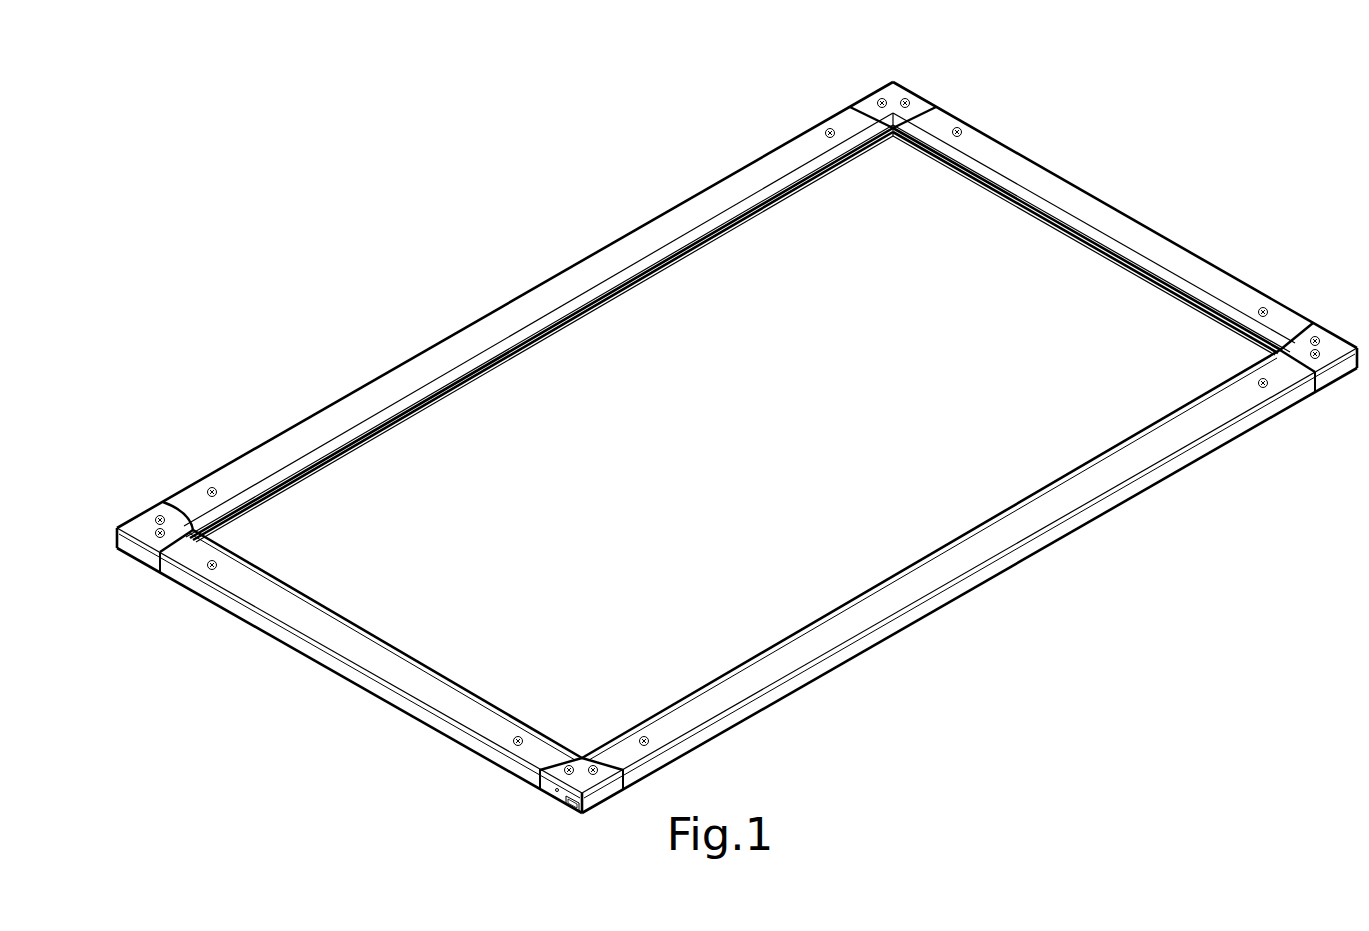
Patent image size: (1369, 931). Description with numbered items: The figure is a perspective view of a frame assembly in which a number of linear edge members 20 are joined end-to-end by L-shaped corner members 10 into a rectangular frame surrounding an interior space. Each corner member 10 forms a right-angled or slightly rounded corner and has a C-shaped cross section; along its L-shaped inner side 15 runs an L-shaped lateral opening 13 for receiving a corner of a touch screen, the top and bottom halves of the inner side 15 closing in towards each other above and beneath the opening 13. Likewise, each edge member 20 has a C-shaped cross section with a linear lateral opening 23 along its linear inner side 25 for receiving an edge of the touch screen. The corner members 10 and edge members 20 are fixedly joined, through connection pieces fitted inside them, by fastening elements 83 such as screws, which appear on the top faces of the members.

The corner member 10 is at (737, 429).
The lateral opening 13 is at (890, 142).
The inner side 15 is at (906, 142).
The edge member 20 is at (1094, 234).
The lateral opening 23 is at (980, 193).
The inner side 25 is at (1040, 212).
The fastening element 83 is at (878, 102).